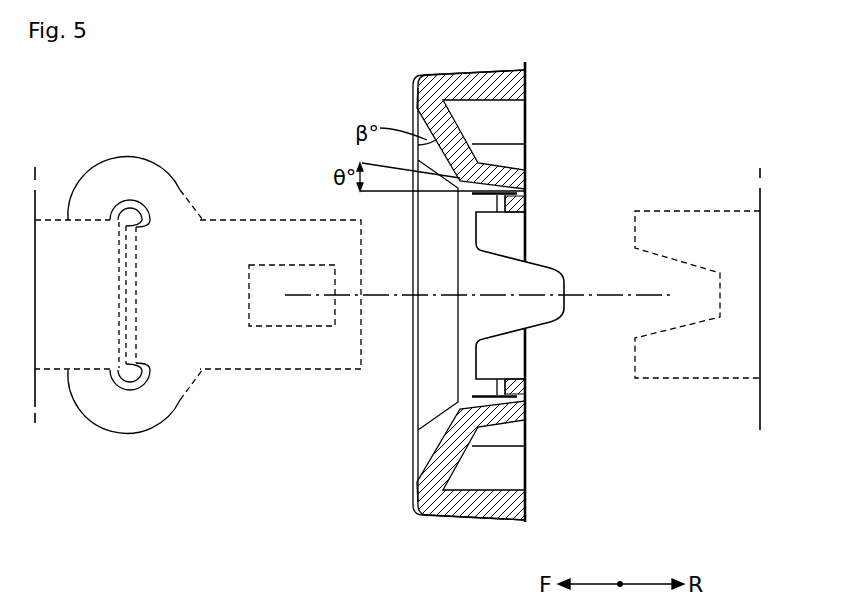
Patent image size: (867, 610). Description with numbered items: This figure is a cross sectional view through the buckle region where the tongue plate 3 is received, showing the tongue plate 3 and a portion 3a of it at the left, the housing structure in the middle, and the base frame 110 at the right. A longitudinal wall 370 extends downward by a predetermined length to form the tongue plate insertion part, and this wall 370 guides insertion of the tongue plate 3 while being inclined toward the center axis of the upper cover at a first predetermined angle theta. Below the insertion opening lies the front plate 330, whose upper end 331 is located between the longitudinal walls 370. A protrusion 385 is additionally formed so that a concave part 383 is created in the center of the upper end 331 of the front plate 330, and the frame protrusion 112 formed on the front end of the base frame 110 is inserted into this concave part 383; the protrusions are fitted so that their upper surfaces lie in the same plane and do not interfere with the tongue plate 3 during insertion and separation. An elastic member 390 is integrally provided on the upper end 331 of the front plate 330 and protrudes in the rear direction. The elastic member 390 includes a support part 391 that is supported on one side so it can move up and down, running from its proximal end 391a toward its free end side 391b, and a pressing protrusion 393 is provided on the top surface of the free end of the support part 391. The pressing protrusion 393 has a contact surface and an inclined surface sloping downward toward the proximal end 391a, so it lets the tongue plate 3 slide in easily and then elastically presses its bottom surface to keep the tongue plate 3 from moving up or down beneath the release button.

The tongue plate 3 is at (147, 173).
The buckle engaging portion 3a is at (291, 273).
The base frame 110 is at (725, 207).
The frame protrusion 112 is at (663, 232).
The front plate 330 is at (437, 450).
The upper end of the front plate 331 is at (472, 365).
The longitudinal wall 370 is at (527, 157).
The concave part 383 is at (514, 352).
The protrusion 385 is at (543, 282).
The elastic member 390 is at (648, 470).
The support part 391 is at (682, 122).
The proximal end of the support part 391a is at (527, 197).
The clip second leg 391b is at (527, 177).
The pressing protrusion 393 is at (525, 390).